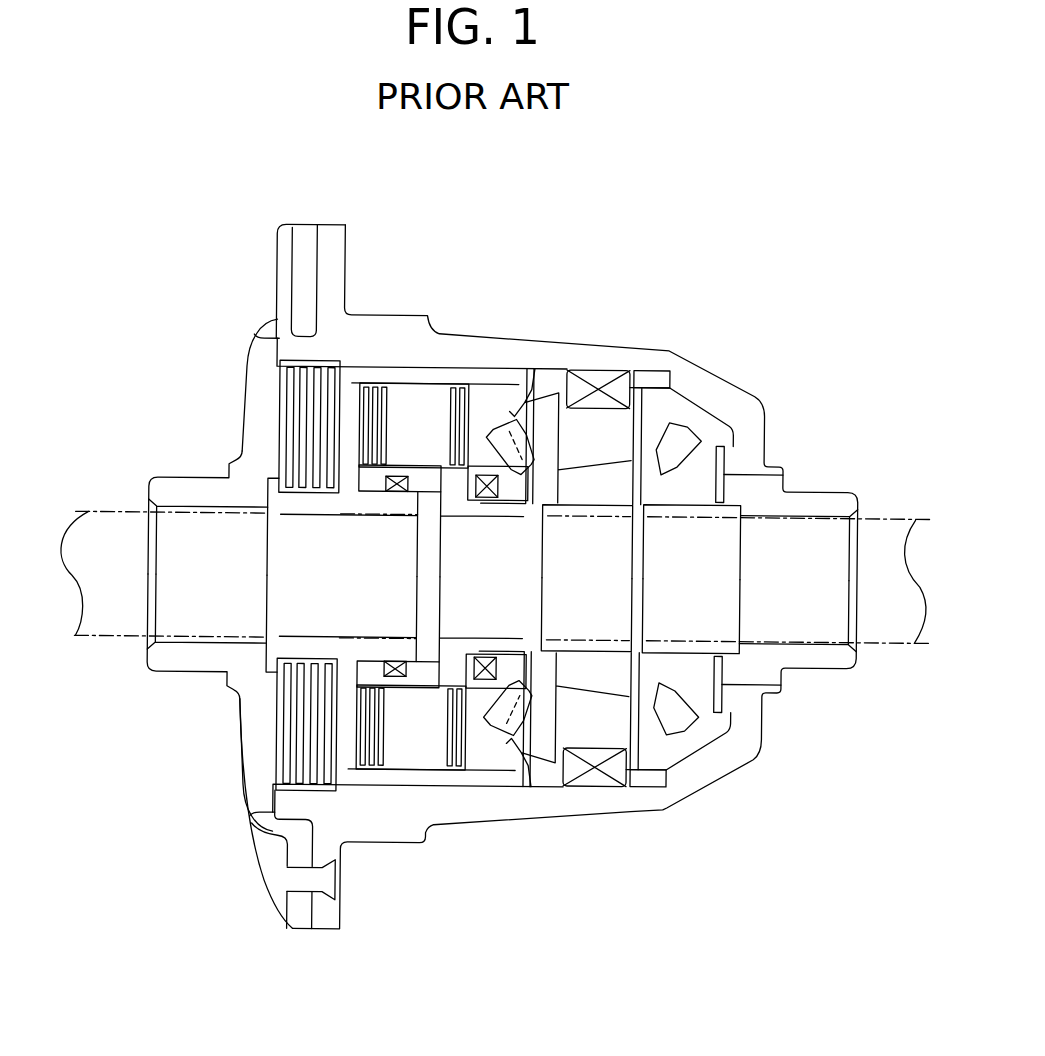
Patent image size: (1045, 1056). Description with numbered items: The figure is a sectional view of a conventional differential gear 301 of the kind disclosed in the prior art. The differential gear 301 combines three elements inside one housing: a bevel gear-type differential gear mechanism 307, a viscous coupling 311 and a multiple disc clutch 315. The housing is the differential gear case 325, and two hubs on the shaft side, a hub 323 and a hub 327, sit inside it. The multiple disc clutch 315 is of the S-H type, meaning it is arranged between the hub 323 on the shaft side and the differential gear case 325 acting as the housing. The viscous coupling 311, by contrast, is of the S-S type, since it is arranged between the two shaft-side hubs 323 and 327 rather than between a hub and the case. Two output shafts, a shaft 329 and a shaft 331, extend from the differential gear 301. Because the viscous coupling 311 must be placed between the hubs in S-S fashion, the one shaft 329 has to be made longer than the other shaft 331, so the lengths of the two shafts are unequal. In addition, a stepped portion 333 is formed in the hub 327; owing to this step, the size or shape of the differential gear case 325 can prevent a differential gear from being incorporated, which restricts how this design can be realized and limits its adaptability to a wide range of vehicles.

The differential gear 301 is at (737, 339).
The bevel gear-type differential gear mechanism 307 is at (601, 324).
The viscous coupling 311 is at (428, 294).
The multiple disc clutch 315 is at (254, 316).
The hub 323 is at (377, 648).
The differential gear case 325 is at (317, 222).
The hub 327 is at (490, 650).
The shaft 329 is at (118, 530).
The shaft 331 is at (870, 540).
The stepped portion 333 is at (450, 488).